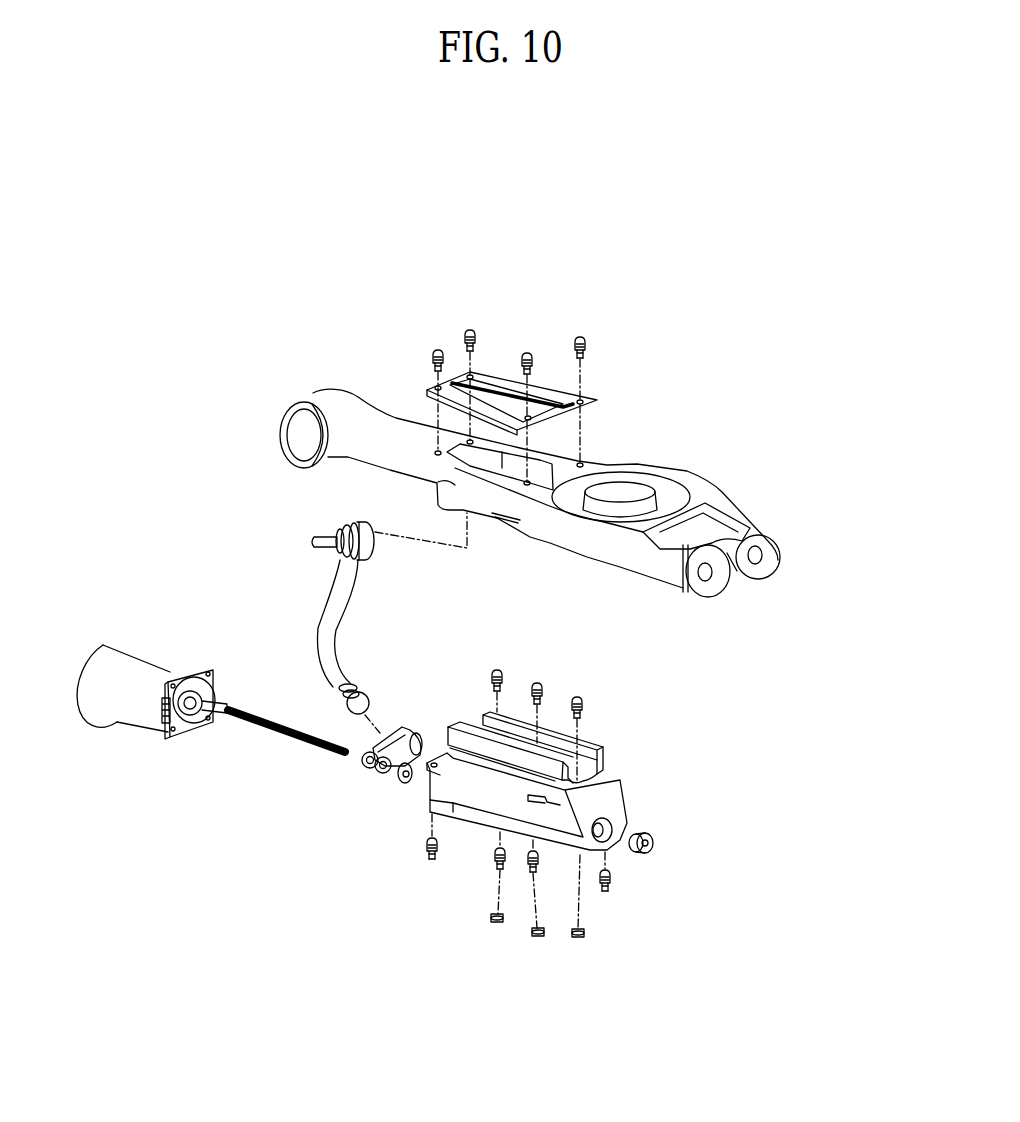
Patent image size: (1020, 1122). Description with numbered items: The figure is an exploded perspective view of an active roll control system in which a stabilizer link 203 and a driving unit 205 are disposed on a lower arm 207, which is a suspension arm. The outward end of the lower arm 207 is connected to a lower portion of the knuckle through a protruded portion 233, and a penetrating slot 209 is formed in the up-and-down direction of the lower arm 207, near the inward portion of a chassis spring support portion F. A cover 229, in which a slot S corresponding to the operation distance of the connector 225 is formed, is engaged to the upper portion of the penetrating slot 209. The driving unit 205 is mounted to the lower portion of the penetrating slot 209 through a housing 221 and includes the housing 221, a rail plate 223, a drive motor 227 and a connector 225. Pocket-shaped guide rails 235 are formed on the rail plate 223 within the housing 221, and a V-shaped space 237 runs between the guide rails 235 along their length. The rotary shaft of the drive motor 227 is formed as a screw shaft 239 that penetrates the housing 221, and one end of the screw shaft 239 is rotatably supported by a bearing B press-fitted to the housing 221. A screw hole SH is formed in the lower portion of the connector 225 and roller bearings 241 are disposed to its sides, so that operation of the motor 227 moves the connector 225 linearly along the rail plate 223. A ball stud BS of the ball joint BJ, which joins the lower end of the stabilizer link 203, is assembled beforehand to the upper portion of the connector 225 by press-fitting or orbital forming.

The lower arm 207 is at (383, 427).
The penetrating slot 209 is at (553, 465).
The cover 229 is at (493, 375).
The slot S is at (550, 398).
The chassis spring support portion F is at (667, 495).
The protruded portion 233 is at (715, 587).
The ball joint BJ is at (368, 537).
The stabilizer link 203 is at (343, 613).
The ball stud BS is at (363, 702).
The drive motor 227 is at (128, 687).
The screw shaft 239 is at (268, 733).
The roller bearings 241 is at (413, 745).
The connector 225 is at (395, 783).
The screw hole SH is at (408, 784).
The rail plate 223 is at (458, 727).
The guide rails 235 is at (568, 768).
The space 237 is at (588, 778).
The housing 221 is at (613, 808).
The bearing B is at (655, 843).
The driving unit 205 is at (308, 892).